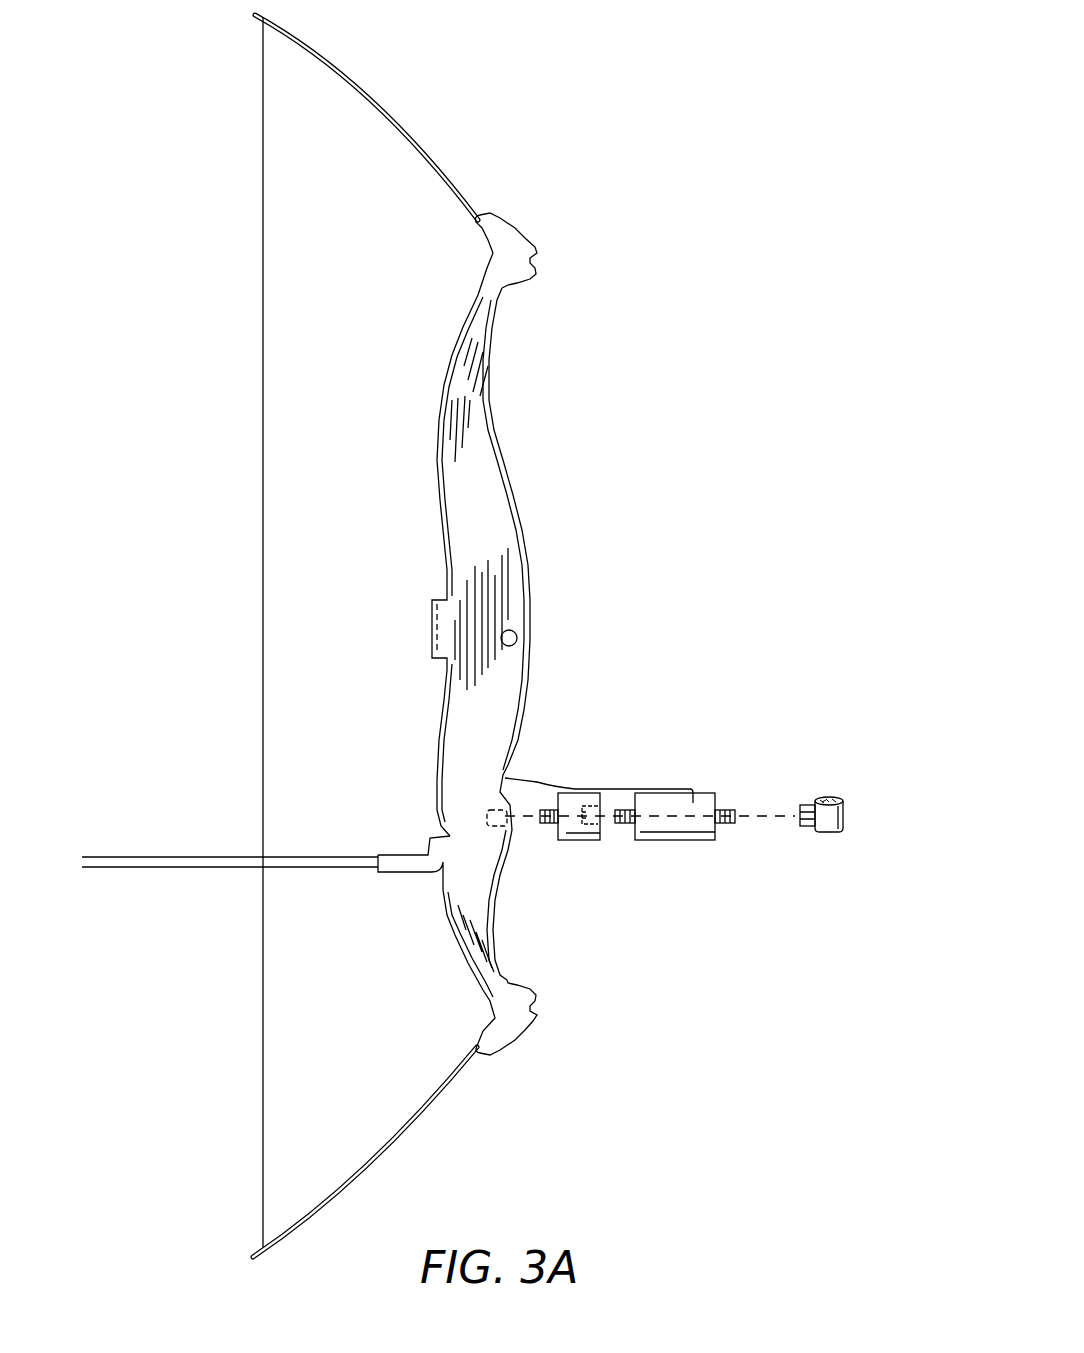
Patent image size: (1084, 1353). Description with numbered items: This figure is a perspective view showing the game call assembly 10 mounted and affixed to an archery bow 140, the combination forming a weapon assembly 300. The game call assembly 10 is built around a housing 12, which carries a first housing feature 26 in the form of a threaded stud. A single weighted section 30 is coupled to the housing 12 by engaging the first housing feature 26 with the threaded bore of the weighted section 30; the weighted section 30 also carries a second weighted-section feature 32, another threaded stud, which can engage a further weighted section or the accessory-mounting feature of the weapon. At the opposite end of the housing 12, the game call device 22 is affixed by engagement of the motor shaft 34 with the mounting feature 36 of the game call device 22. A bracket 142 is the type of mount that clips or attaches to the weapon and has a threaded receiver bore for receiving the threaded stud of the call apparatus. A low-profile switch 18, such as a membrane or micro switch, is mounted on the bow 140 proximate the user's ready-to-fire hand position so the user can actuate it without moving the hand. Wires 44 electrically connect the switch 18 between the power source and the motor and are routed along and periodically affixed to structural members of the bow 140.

The weapon assembly 300 is at (374, 636).
The archery bow 140 is at (556, 506).
The switch 18 is at (517, 640).
The wires 44 is at (540, 782).
The bracket 142 is at (492, 810).
The game call assembly 10 is at (650, 800).
The second weighted-section feature 32 is at (551, 826).
The weighted section 30 is at (582, 841).
The first housing feature 26 is at (624, 826).
The housing 12 is at (685, 841).
The shaft 34 is at (724, 826).
The mounting feature 36 is at (810, 802).
The game call device 22 is at (850, 817).